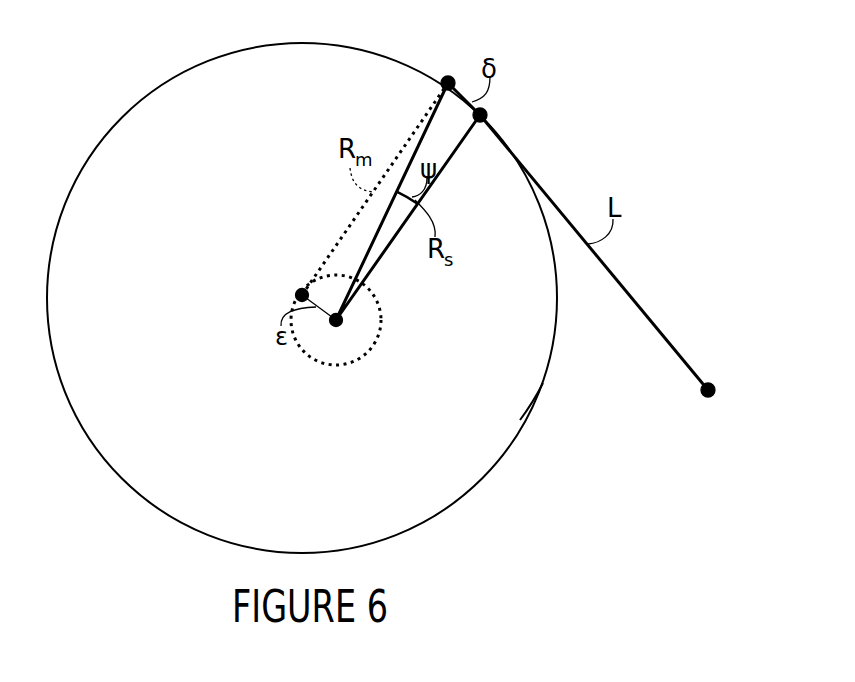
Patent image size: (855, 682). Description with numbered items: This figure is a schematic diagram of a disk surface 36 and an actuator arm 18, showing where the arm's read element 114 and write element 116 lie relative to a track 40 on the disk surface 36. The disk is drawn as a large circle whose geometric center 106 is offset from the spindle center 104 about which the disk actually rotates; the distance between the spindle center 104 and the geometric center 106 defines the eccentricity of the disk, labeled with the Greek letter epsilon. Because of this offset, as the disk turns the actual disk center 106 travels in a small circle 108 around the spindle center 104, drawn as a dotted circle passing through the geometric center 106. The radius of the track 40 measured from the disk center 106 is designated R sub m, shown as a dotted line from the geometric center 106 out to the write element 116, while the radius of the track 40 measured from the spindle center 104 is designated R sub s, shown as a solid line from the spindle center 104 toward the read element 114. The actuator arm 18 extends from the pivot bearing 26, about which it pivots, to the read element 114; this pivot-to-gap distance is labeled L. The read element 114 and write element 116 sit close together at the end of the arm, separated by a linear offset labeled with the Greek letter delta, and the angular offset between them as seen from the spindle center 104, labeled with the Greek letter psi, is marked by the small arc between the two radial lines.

The disk surface 36 is at (108, 190).
The track 40 is at (543, 383).
The actuator arm 18 is at (643, 310).
The pivot bearing 26 is at (713, 387).
The spindle center 104 is at (342, 319).
The geometric center 106 is at (298, 293).
The circle 108 is at (318, 368).
The read element 114 is at (487, 112).
The write element 116 is at (452, 80).